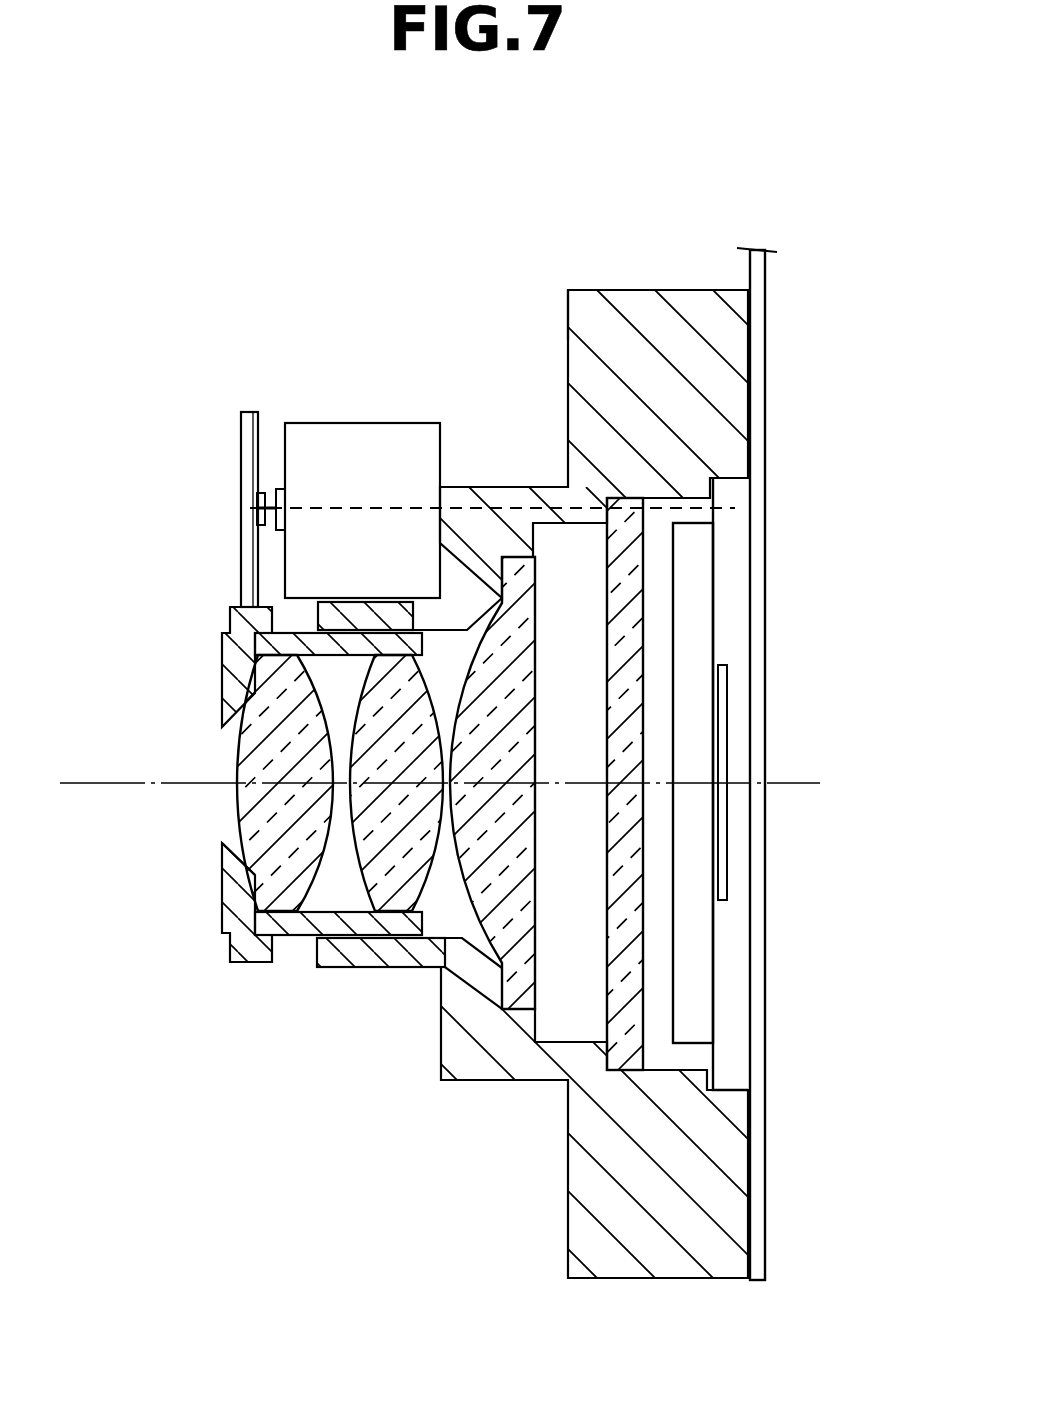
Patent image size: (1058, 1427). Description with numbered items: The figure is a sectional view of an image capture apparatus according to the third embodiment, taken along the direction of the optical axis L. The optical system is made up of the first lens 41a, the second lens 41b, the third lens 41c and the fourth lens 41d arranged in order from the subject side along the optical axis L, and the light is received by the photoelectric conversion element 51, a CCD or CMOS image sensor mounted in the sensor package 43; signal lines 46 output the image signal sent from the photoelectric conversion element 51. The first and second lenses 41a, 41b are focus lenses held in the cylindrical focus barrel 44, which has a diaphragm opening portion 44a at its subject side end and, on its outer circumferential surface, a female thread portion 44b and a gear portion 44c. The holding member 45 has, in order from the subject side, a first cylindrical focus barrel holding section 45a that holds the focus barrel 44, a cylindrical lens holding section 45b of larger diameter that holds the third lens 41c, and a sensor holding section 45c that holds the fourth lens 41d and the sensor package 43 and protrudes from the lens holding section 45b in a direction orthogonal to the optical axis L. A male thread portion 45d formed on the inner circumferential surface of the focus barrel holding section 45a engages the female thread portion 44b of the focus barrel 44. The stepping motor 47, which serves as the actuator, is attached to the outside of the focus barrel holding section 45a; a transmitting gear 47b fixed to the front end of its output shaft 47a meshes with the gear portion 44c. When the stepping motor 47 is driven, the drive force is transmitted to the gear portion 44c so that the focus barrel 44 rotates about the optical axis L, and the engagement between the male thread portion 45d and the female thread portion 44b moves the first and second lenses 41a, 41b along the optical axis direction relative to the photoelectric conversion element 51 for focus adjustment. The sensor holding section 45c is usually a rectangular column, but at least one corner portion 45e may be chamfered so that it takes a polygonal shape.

The optical axis L is at (178, 783).
The first lens 41a is at (288, 903).
The second lens 41b is at (397, 898).
The third lens 41c is at (520, 1000).
The fourth lens 41d is at (630, 1052).
The sensor package 43 is at (735, 538).
The focus barrel 44 is at (223, 907).
The diaphragm opening portion 44a is at (222, 865).
The female thread portion 44b is at (335, 940).
The gear portion 44c is at (240, 606).
The holding member 45 is at (467, 497).
The focus barrel holding section 45a is at (368, 968).
The lens holding section 45b is at (533, 493).
The sensor holding section 45c is at (650, 318).
The male thread portion 45d is at (366, 628).
The corner portion 45e is at (568, 290).
The signal lines 46 is at (767, 280).
The stepping motor 47 is at (313, 440).
The output shaft 47a is at (252, 508).
The transmitting gear 47b is at (250, 437).
The photoelectric conversion element 51 is at (722, 707).